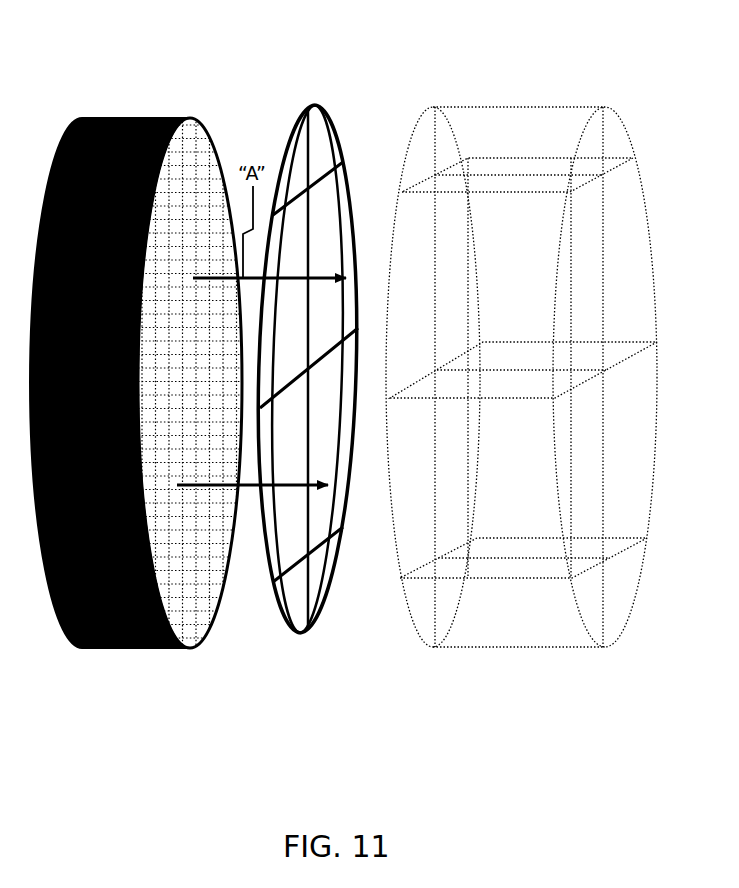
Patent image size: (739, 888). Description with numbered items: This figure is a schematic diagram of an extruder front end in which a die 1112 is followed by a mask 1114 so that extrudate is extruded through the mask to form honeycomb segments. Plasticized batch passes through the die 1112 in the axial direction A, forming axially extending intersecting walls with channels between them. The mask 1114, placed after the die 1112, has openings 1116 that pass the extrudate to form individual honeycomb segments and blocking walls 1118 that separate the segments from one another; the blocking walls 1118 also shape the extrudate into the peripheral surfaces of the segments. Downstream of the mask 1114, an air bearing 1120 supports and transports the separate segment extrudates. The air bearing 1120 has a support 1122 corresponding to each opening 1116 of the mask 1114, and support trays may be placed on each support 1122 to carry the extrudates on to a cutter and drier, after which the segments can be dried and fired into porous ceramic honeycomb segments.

The die 1112 is at (163, 118).
The mask 1114 is at (325, 112).
The opening 1116 is at (320, 254).
The blocking wall 1118 is at (337, 172).
The air bearing 1120 is at (558, 106).
The support 1122 is at (623, 167).